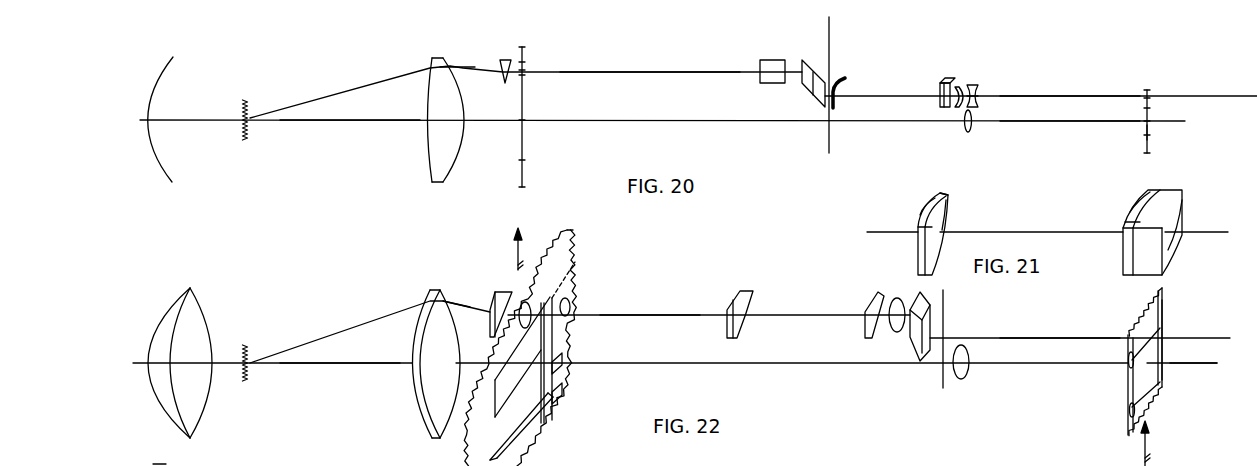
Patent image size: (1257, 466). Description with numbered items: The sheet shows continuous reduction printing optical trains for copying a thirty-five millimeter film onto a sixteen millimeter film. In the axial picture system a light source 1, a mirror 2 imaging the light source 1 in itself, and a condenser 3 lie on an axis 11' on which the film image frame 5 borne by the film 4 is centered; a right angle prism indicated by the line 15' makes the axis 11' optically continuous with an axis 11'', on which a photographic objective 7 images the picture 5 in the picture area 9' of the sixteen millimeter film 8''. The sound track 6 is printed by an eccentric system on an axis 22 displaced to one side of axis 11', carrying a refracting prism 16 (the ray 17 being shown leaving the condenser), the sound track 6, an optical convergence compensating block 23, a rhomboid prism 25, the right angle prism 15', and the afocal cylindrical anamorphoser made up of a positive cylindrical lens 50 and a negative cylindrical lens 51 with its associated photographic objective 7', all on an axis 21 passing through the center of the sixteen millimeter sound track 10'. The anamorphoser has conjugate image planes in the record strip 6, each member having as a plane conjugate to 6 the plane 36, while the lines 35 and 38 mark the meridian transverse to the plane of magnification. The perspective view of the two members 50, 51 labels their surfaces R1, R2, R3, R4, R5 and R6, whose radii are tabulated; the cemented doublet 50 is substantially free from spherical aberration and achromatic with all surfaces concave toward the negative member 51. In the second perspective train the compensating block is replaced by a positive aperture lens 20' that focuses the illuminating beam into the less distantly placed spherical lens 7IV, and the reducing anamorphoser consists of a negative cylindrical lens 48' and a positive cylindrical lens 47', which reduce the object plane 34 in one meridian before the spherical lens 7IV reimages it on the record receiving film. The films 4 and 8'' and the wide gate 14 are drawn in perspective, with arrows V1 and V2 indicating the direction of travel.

In FIG. 20, the light source 1 is at (252, 128).
In FIG. 22, the light source 1 is at (253, 373).
In FIG. 20, the mirror 2 is at (167, 124).
In FIG. 22, the mirror 2 is at (180, 364).
In FIG. 20, the condenser 3 is at (439, 122).
In FIG. 22, the condenser 3 is at (432, 365).
In FIG. 20, the film 4 is at (514, 124).
In FIG. 22, the film 4 is at (527, 437).
In FIG. 20, the film image frame 5 is at (524, 122).
In FIG. 22, the film image frame 5 is at (522, 357).
In FIG. 20, the sound track 6 is at (524, 72).
In FIG. 22, the sound track 6 is at (552, 325).
In FIG. 20, the photographic objective 7 is at (979, 135).
In FIG. 22, the photographic objective 7 is at (972, 368).
In FIG. 20, the photographic objective 7' is at (994, 70).
In FIG. 22, the spherical lens 7IV is at (898, 332).
In FIG. 20, the 16 mm. film 8'' is at (1175, 142).
In FIG. 22, the 16 mm. film 8'' is at (1118, 423).
In FIG. 20, the picture area 9' is at (1136, 141).
In FIG. 22, the picture area 9' is at (1168, 351).
In FIG. 20, the 16 mm. sound track 10' is at (1175, 101).
In FIG. 22, the 16 mm. sound track 10' is at (1184, 332).
In FIG. 20, the axis 11' is at (350, 138).
In FIG. 22, the axis 11' is at (340, 380).
In FIG. 20, the axis 11'' is at (1070, 139).
In FIG. 22, the axis 11'' is at (1196, 377).
In FIG. 22, the wide gate 14 is at (562, 259).
In FIG. 20, the right angle prism 15' is at (848, 85).
In FIG. 22, the right angle prism 15' is at (962, 339).
In FIG. 20, the refracting prism 16 is at (500, 70).
In FIG. 22, the refracting prism 16 is at (493, 298).
In FIG. 20, the light ray 17 is at (461, 67).
In FIG. 22, the light ray 17 is at (455, 300).
In FIG. 22, the positive aperture lens 20' is at (508, 297).
In FIG. 20, the axis 21 is at (1060, 96).
In FIG. 22, the axis 21 is at (1036, 338).
In FIG. 20, the axis 22 is at (643, 72).
In FIG. 22, the axis 22 is at (645, 309).
In FIG. 20, the optical convergence compensating block 23 is at (768, 60).
In FIG. 20, the rhomboid prism 25 is at (805, 62).
In FIG. 22, the rhomboid prism 25 is at (922, 362).
In FIG. 22, the object plane 34 is at (1161, 290).
In FIG. 20, the line in plane of magnification 35 is at (523, 63).
In FIG. 22, the line in plane of magnification 35 is at (573, 318).
In FIG. 20, the conjugate plane 36 is at (1200, 113).
In FIG. 20, the meridian line 38 is at (1150, 105).
In FIG. 22, the meridian line 38 is at (1157, 338).
In FIG. 22, the positive cylindrical lens 47' is at (866, 306).
In FIG. 22, the negative cylindrical lens 48' is at (757, 306).
In FIG. 20, the positive cylindrical lens 50 is at (842, 76).
In FIG. 21, the positive cylindrical lens 50 is at (917, 234).
In FIG. 20, the negative cylindrical lens 51 is at (952, 78).
In FIG. 21, the negative cylindrical lens 51 is at (1167, 232).
In FIG. 21, the surface radius R1 is at (946, 194).
In FIG. 21, the surface radius R2 is at (945, 215).
In FIG. 21, the surface radius R3 is at (948, 200).
In FIG. 21, the surface radius R4 is at (1138, 208).
In FIG. 21, the surface radius R5 is at (1137, 218).
In FIG. 21, the surface radius R6 is at (1177, 217).
In FIG. 22, the direction of travel arrow V1 is at (528, 249).
In FIG. 22, the direction of travel arrow V2 is at (1156, 443).